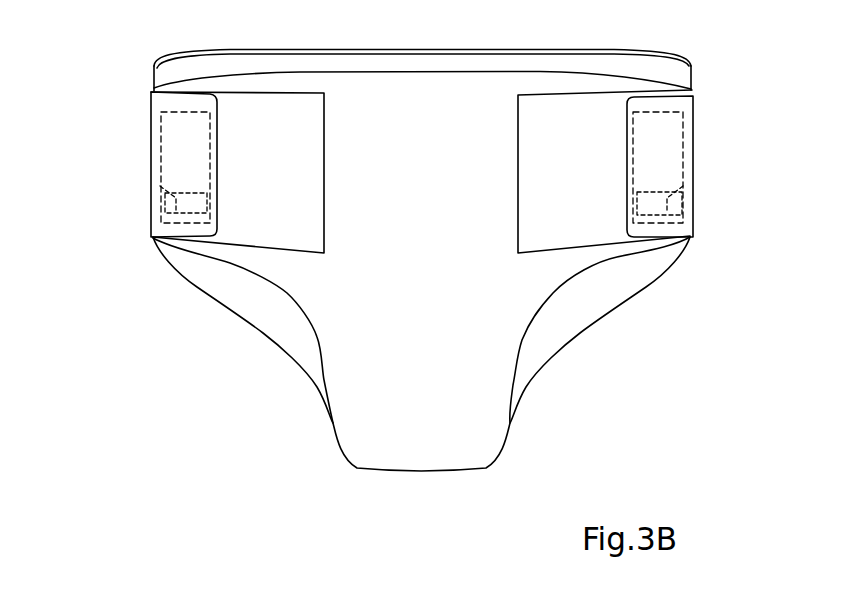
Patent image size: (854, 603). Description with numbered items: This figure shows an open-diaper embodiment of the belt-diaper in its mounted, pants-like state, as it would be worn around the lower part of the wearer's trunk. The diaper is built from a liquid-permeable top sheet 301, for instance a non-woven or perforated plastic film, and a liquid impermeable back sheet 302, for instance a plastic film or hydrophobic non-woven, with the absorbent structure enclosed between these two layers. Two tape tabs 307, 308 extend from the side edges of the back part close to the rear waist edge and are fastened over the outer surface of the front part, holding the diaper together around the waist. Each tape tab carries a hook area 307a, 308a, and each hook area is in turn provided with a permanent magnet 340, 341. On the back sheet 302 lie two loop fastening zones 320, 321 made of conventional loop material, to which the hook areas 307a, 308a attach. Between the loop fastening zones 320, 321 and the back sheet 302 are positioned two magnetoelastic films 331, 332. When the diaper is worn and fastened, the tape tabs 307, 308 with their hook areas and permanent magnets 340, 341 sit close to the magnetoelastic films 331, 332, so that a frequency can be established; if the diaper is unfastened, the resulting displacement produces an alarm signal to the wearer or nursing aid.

The liquid-permeable top sheet 301 is at (587, 290).
The liquid impermeable back sheet 302 is at (503, 325).
The tape tab 307 is at (177, 102).
The hook area 307a is at (172, 130).
The tape tab 308 is at (668, 105).
The hook area 308a is at (672, 130).
The loop fastening zone 320 is at (273, 220).
The loop fastening zone 321 is at (568, 220).
The magnetoelastic film 331 is at (163, 210).
The magnetoelastic film 332 is at (665, 208).
The permanent magnet 340 is at (165, 192).
The permanent magnet 341 is at (660, 187).